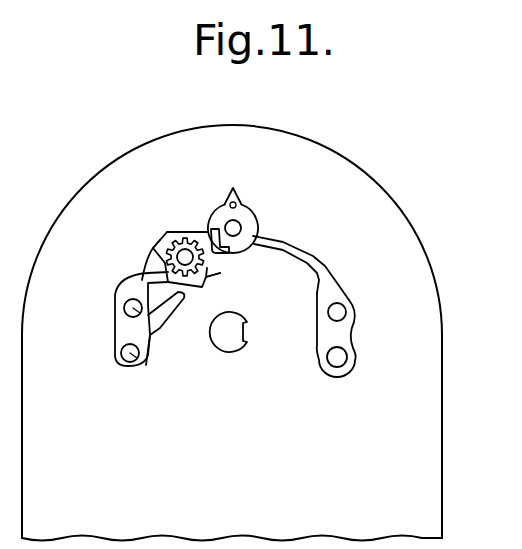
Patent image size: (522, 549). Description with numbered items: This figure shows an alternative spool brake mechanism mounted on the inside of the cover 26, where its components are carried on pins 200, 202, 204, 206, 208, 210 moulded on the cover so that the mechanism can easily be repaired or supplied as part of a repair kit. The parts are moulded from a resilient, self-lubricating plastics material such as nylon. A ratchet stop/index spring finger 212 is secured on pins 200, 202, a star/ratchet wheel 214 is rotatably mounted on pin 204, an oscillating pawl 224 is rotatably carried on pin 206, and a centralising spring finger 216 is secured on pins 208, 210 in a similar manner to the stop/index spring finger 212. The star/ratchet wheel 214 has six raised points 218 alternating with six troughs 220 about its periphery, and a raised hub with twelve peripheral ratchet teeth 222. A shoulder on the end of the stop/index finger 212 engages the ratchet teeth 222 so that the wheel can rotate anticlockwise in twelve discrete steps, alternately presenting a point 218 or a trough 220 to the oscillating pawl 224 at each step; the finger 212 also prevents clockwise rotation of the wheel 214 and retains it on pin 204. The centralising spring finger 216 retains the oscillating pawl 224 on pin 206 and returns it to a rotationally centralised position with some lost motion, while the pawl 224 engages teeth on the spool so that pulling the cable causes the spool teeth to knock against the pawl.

The cover 26 is at (427, 455).
The pin 200 is at (147, 376).
The pin 202 is at (150, 332).
The pin 204 is at (182, 225).
The pin 206 is at (223, 202).
The pin 208 is at (337, 312).
The pin 210 is at (338, 357).
The ratchet stop/index spring finger 212 is at (144, 262).
The star/ratchet wheel 214 is at (192, 229).
The centralising spring finger 216 is at (295, 244).
The raised points 218 is at (167, 231).
The troughs 220 is at (157, 243).
The ratchet teeth 222 is at (213, 270).
The oscillating pawl 224 is at (254, 207).